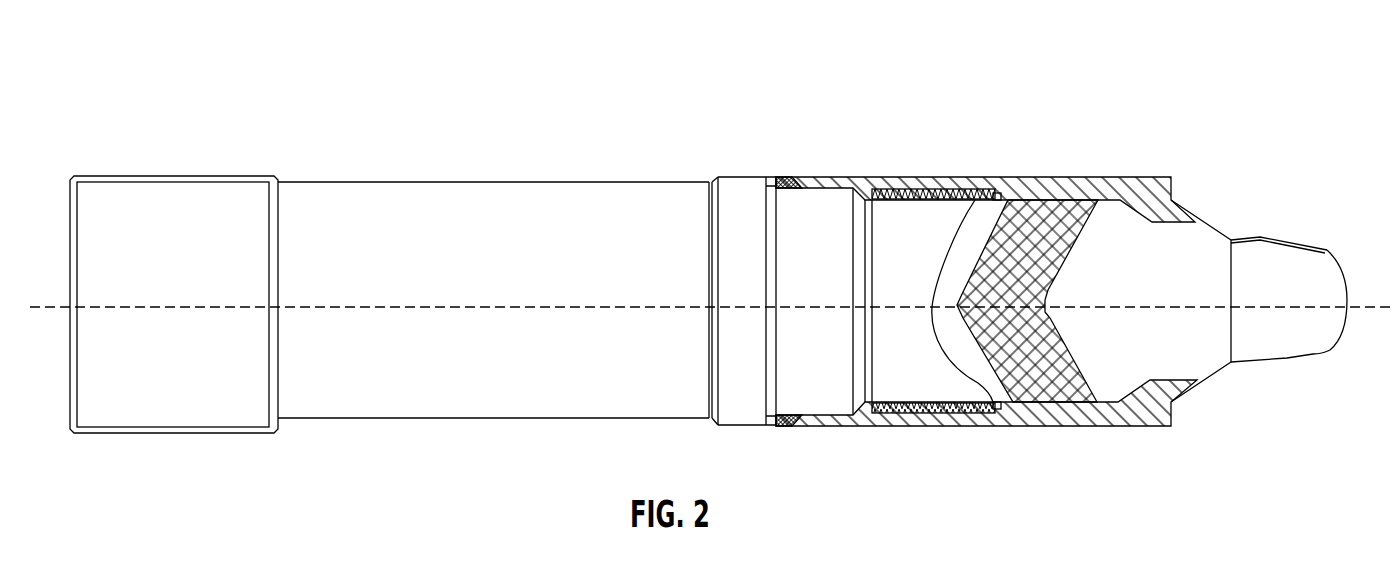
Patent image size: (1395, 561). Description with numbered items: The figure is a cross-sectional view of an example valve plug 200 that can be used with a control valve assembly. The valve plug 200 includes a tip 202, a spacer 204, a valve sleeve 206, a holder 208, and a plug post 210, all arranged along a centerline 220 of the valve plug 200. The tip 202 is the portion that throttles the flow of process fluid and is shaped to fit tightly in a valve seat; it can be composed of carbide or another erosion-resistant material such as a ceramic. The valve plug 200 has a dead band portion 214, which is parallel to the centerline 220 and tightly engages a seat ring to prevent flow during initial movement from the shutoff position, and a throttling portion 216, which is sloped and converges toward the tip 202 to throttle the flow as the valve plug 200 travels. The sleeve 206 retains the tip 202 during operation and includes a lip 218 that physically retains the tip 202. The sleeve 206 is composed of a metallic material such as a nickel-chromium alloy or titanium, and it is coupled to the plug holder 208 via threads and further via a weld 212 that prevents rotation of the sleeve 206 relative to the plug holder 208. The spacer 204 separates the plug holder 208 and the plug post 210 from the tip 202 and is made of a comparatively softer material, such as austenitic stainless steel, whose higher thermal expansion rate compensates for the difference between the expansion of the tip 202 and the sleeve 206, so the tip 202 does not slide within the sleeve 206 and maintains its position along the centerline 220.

The valve plug 200 is at (1133, 41).
The tip 202 is at (1282, 362).
The spacer 204 is at (1057, 198).
The valve sleeve 206 is at (832, 177).
The holder 208 is at (917, 177).
The plug post 210 is at (362, 181).
The weld 212 is at (782, 183).
The dead band portion 214 is at (1233, 237).
The throttling portion 216 is at (1293, 235).
The lip 218 is at (1185, 208).
The centerline 220 is at (490, 305).